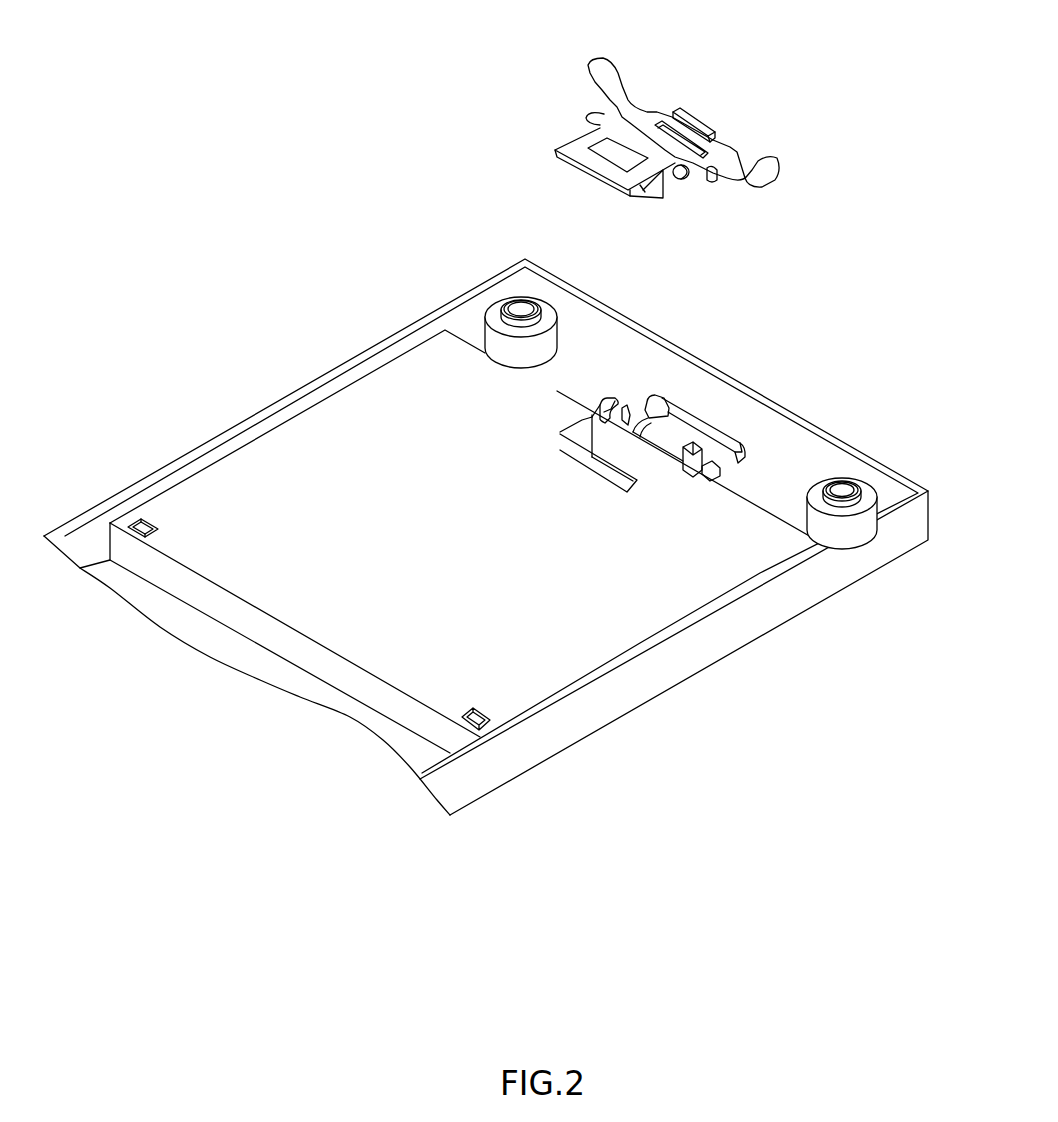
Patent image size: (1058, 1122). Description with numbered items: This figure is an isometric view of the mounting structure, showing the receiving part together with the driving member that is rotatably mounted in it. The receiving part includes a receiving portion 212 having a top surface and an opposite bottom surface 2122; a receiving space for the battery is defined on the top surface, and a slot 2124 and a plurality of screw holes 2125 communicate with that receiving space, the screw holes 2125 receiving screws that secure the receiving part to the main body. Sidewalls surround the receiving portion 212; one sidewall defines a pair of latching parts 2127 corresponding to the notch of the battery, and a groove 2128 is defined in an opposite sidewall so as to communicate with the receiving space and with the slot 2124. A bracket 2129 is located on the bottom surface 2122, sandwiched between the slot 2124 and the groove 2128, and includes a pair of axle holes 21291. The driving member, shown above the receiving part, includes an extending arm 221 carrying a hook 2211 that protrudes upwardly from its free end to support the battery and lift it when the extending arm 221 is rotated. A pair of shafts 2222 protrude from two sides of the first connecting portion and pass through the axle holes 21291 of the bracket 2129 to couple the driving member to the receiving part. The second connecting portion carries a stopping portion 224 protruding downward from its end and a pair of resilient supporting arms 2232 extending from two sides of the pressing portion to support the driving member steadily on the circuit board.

The receiving portion 212 is at (512, 748).
The bottom surface 2122 is at (765, 487).
The slot 2124 is at (665, 433).
The screw holes 2125 is at (838, 497).
The latching parts 2127 is at (137, 518).
The groove 2128 is at (585, 383).
The bracket 2129 is at (616, 426).
The axle hole 21291 is at (605, 398).
The extending arm 221 is at (575, 146).
The hook 2211 is at (580, 167).
The shafts 2222 is at (678, 183).
The stopping portion 224 is at (702, 127).
The supporting arms 2232 is at (612, 80).